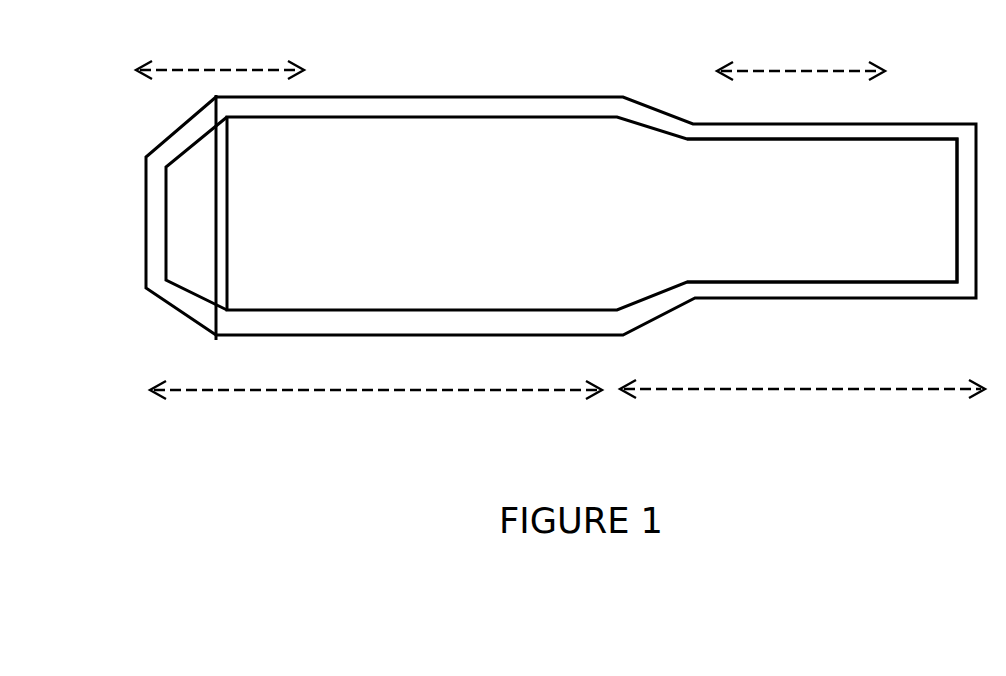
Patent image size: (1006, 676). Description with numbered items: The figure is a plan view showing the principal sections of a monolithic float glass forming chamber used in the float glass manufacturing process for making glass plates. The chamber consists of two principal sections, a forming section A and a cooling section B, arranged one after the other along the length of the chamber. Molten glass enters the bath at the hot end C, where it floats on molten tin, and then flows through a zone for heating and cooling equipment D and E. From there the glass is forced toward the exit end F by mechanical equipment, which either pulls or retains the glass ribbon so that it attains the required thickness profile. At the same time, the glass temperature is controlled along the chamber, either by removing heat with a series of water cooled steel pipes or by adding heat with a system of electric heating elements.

The forming section A is at (376, 420).
The cooling section B is at (802, 417).
The hot end C is at (156, 216).
The zone for heating and cooling equipment D is at (220, 45).
The zone for heating and cooling equipment E is at (801, 45).
The exit end F is at (822, 210).